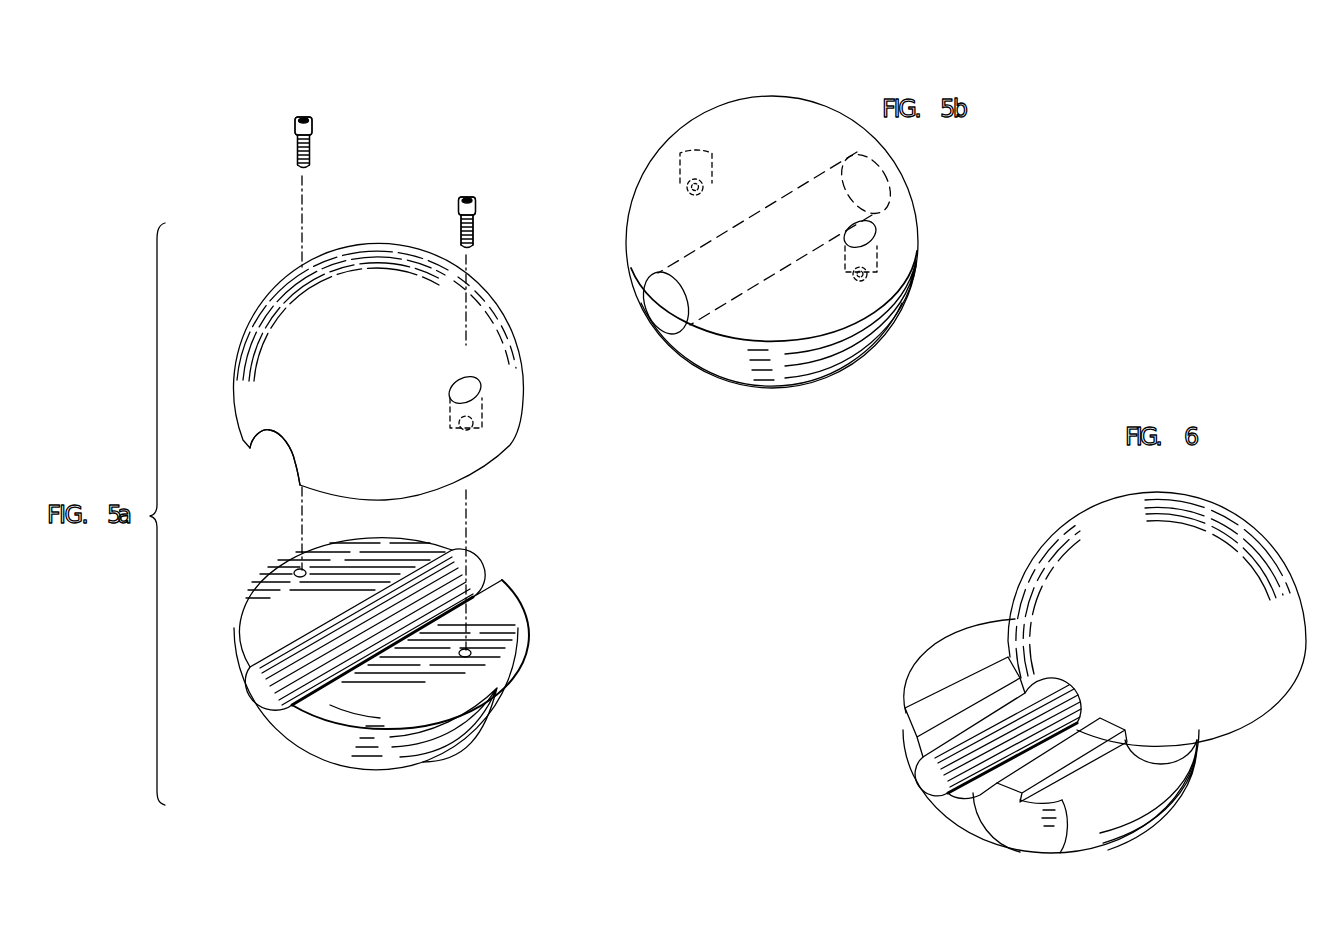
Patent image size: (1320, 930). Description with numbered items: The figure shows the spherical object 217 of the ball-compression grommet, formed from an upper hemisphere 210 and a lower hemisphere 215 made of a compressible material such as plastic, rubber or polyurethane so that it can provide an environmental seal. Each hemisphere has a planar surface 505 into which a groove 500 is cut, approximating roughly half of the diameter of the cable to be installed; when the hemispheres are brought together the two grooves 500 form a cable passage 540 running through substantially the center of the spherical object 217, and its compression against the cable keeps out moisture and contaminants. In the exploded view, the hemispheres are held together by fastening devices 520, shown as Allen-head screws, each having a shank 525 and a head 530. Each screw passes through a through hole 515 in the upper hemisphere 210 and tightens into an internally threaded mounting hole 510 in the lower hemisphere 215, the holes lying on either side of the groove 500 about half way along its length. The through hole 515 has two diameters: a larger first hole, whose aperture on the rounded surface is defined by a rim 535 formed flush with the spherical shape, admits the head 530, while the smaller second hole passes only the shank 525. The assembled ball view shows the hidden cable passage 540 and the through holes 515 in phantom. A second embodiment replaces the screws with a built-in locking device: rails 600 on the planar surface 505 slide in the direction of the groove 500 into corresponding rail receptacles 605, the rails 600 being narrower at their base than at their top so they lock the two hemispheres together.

In FIG. 5a, the upper hemisphere 210 is at (450, 488).
In FIG. 6, the upper hemisphere 210 is at (1201, 507).
In FIG. 5a, the lower hemisphere 215 is at (522, 610).
In FIG. 6, the lower hemisphere 215 is at (1138, 818).
In FIG. 5a, the spherical object 217 is at (548, 514).
In FIG. 5b, the spherical object 217 is at (766, 85).
In FIG. 5a, the groove 500 is at (275, 444).
In FIG. 6, the groove 500 is at (940, 792).
In FIG. 5a, the planar surface 505 is at (365, 706).
In FIG. 6, the planar surface 505 is at (930, 680).
In FIG. 5a, the mounting holes 510 is at (298, 571).
In FIG. 5b, the through holes 515 is at (670, 185).
In FIG. 5a, the fastening device 520 is at (290, 155).
In FIG. 5a, the shank 525 is at (306, 153).
In FIG. 5a, the head 530 is at (329, 108).
In FIG. 5a, the rim 535 is at (456, 380).
In FIG. 5b, the rim 535 is at (688, 139).
In FIG. 5b, the cable passage 540 is at (665, 295).
In FIG. 6, the rails 600 is at (1068, 850).
In FIG. 6, the rail receptacles 605 is at (977, 637).